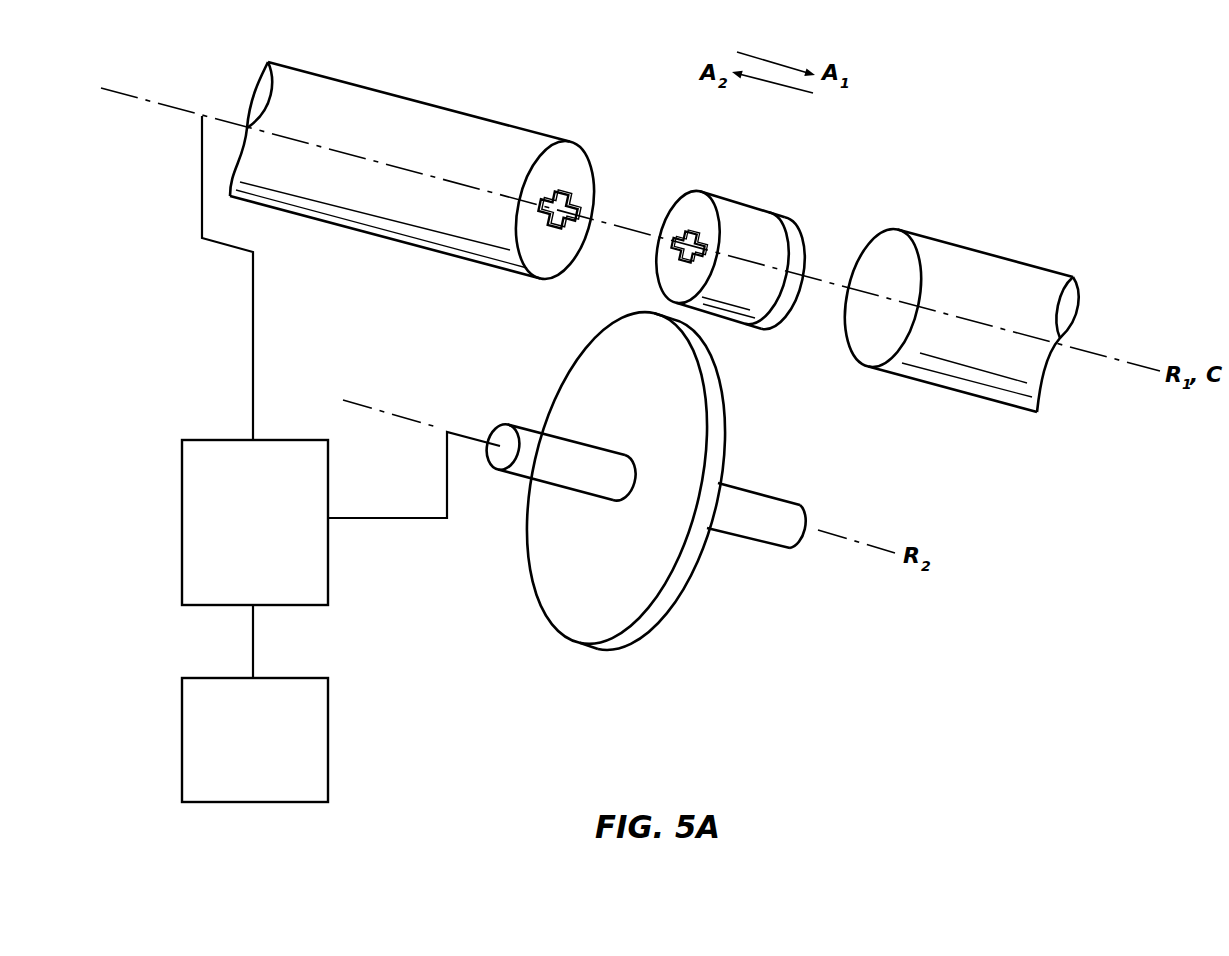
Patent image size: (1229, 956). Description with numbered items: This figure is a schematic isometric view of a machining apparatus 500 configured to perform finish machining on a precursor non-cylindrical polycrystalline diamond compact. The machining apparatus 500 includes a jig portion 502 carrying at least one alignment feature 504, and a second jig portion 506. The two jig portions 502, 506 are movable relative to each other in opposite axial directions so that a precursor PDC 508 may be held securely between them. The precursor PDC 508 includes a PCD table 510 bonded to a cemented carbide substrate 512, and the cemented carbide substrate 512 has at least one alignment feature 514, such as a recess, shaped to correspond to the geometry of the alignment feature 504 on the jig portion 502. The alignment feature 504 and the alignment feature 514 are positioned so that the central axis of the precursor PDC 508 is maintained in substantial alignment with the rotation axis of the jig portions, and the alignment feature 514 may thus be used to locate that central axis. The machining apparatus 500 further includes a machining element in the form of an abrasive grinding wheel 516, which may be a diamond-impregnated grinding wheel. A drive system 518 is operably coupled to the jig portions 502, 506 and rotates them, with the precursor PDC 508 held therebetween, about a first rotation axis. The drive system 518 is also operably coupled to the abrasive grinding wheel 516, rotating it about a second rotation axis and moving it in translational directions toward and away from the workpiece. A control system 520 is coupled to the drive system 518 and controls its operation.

The machining apparatus 500 is at (905, 120).
The jig portion 502 is at (412, 130).
The alignment feature 504 is at (568, 193).
The jig portion 506 is at (953, 388).
The precursor PDC 508 is at (768, 222).
The PCD table 510 is at (793, 228).
The cemented carbide substrate 512 is at (747, 213).
The alignment feature 514 is at (683, 237).
The abrasive grinding wheel 516 is at (680, 572).
The drive system 518 is at (234, 566).
The control system 520 is at (234, 781).